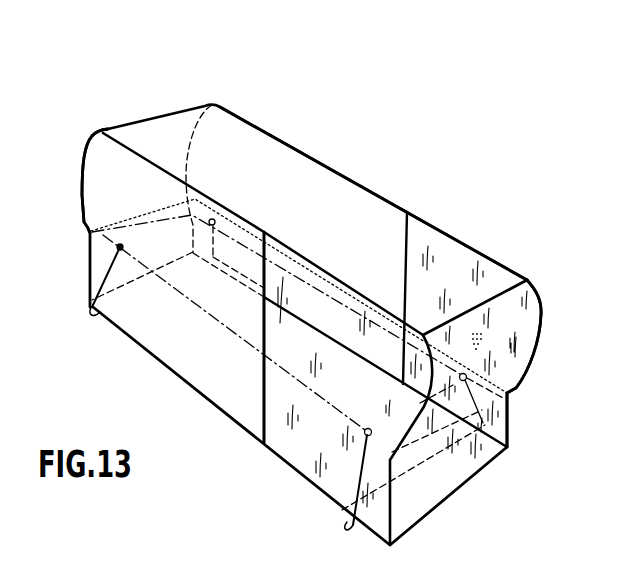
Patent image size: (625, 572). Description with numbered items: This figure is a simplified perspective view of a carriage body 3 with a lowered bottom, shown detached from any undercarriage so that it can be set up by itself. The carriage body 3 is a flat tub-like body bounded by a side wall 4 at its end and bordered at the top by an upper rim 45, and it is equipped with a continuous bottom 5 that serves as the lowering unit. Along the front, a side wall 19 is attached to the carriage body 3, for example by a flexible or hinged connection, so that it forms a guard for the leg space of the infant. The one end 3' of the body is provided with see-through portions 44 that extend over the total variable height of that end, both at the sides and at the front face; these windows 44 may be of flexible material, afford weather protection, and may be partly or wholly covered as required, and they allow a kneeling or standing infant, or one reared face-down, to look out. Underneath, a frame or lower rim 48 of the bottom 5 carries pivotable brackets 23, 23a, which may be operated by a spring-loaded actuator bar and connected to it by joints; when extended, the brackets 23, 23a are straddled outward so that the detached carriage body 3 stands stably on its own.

The carriage body 3 is at (304, 240).
The end of carriage body 3' is at (461, 362).
The side wall 4 is at (90, 170).
The bottom 5 is at (194, 401).
The side wall 19 is at (238, 400).
The bracket 23 is at (88, 308).
The bracket 23a is at (348, 527).
The see-through portion 44 is at (523, 325).
The upper rim 45 is at (370, 187).
The lower rim 48 is at (200, 312).